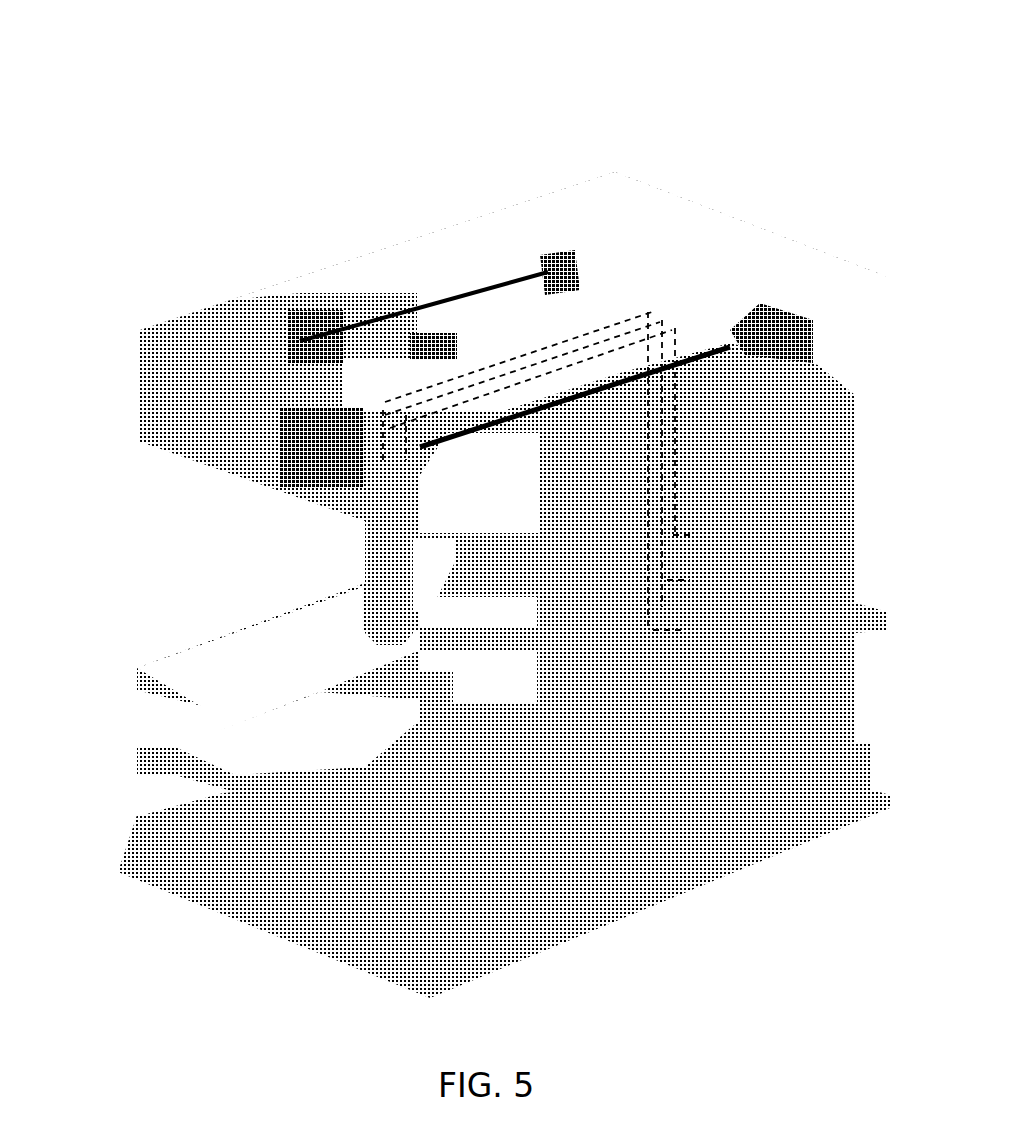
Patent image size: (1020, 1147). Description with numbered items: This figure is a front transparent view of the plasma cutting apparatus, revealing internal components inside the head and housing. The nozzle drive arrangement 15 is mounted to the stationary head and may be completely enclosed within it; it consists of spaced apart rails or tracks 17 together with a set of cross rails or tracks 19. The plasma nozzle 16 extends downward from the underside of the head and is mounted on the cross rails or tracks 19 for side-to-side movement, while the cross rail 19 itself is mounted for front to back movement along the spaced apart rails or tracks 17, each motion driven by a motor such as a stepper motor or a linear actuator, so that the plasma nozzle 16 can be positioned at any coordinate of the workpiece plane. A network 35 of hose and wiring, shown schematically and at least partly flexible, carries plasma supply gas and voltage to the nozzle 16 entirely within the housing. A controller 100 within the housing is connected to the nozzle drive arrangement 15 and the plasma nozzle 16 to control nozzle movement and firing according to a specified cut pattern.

The nozzle drive arrangement 15 is at (422, 165).
The plasma nozzle 16 is at (363, 557).
The spaced apart rails or tracks 17 is at (500, 285).
The cross rails or tracks 19 is at (420, 335).
The network of hose and wiring 35 is at (660, 299).
The controller 100 is at (282, 462).